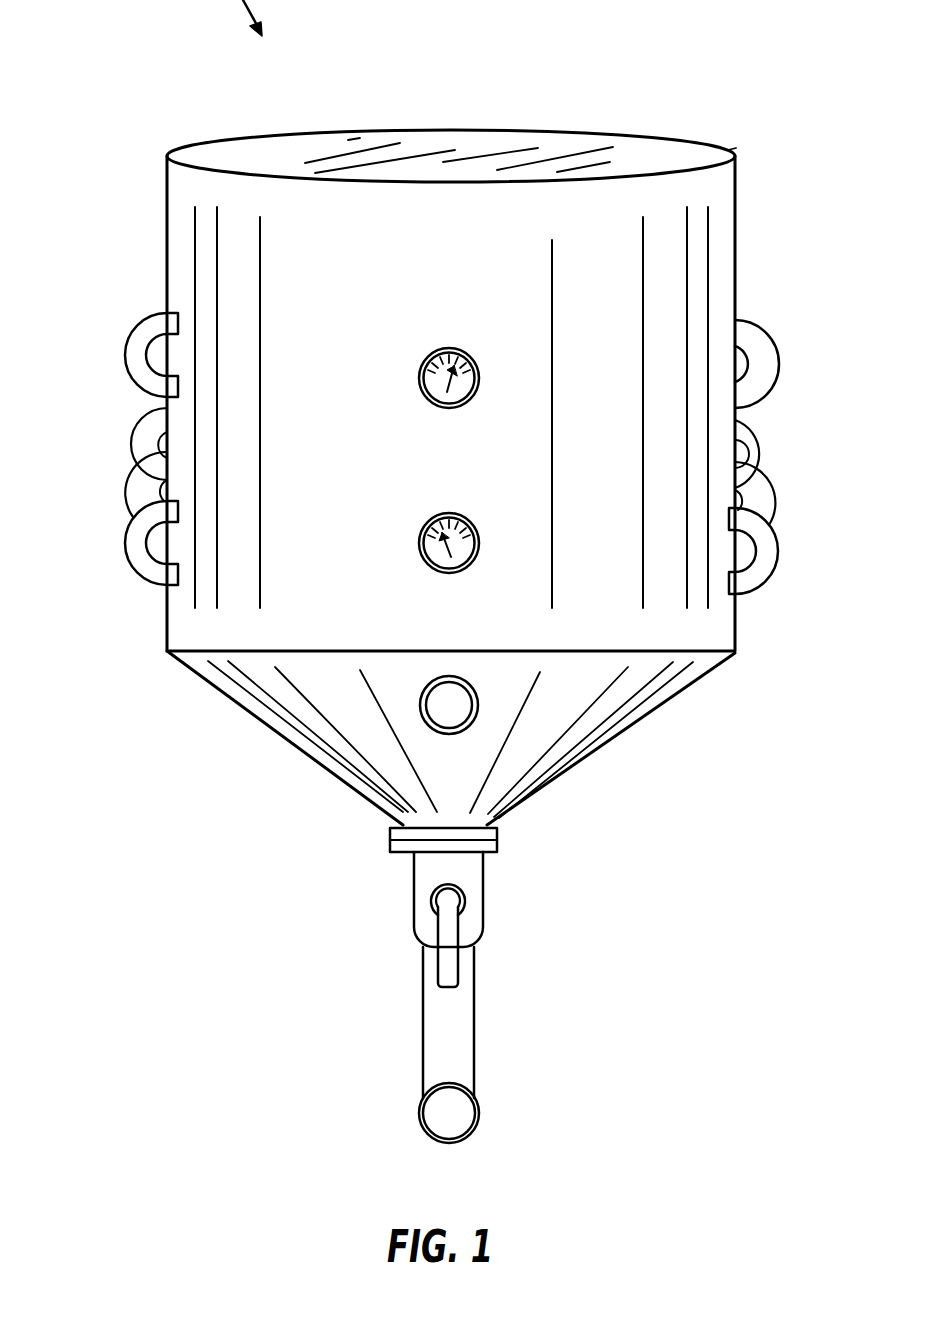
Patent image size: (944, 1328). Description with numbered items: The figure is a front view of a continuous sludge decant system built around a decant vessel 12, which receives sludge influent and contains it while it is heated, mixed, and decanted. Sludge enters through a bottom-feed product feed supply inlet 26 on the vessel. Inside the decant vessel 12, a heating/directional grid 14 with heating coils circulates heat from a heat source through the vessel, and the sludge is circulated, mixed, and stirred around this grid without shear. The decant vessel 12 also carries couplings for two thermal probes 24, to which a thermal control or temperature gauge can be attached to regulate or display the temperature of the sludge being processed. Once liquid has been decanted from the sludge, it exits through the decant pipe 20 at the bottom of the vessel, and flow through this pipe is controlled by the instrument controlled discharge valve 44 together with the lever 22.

The decant vessel 12 is at (177, 204).
The heating/directional grid 14 is at (137, 357).
The decant pipe 20 is at (440, 1068).
The lever 22 is at (447, 970).
The thermal probe 24 is at (473, 363).
The product feed supply inlet 26 is at (452, 707).
The discharge valve 44 is at (473, 917).